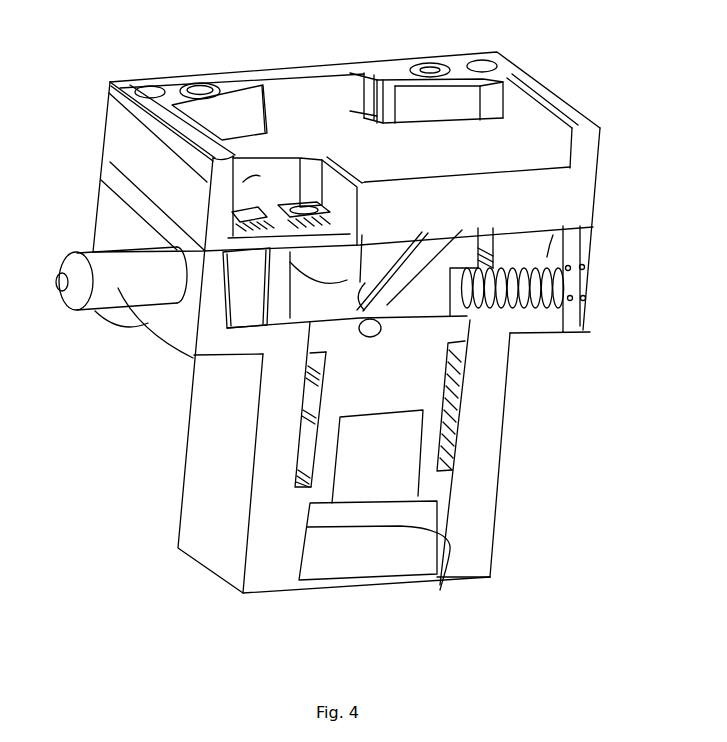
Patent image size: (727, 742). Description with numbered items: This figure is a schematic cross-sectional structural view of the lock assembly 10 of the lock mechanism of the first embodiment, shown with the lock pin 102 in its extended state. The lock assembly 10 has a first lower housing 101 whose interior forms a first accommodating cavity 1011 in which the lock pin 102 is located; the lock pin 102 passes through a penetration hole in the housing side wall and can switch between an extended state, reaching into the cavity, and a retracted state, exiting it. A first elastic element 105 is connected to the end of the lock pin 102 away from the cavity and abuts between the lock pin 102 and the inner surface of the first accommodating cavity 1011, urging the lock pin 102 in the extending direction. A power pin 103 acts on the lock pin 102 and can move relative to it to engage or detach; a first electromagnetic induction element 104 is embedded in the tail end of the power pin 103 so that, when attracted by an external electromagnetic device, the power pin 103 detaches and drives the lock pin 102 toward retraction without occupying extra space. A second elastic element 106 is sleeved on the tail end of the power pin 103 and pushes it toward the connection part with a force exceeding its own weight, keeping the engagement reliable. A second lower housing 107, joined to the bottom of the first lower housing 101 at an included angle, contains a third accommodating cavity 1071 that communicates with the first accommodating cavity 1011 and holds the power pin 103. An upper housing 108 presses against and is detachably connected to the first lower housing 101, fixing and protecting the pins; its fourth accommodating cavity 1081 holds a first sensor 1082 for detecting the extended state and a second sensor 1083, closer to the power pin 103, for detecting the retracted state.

The lock assembly 10 is at (610, 624).
The first lower housing 101 is at (180, 320).
The first accommodating cavity 1011 is at (593, 227).
The lock pin 102 is at (107, 326).
The power pin 103 is at (343, 402).
The first electromagnetic induction element 104 is at (342, 465).
The first elastic element 105 is at (567, 332).
The second elastic element 106 is at (466, 412).
The second lower housing 107 is at (478, 520).
The third accommodating cavity 1071 is at (440, 590).
The upper housing 108 is at (227, 83).
The fourth accommodating cavity 1081 is at (110, 108).
The first sensor 1082 is at (110, 162).
The second sensor 1083 is at (300, 205).